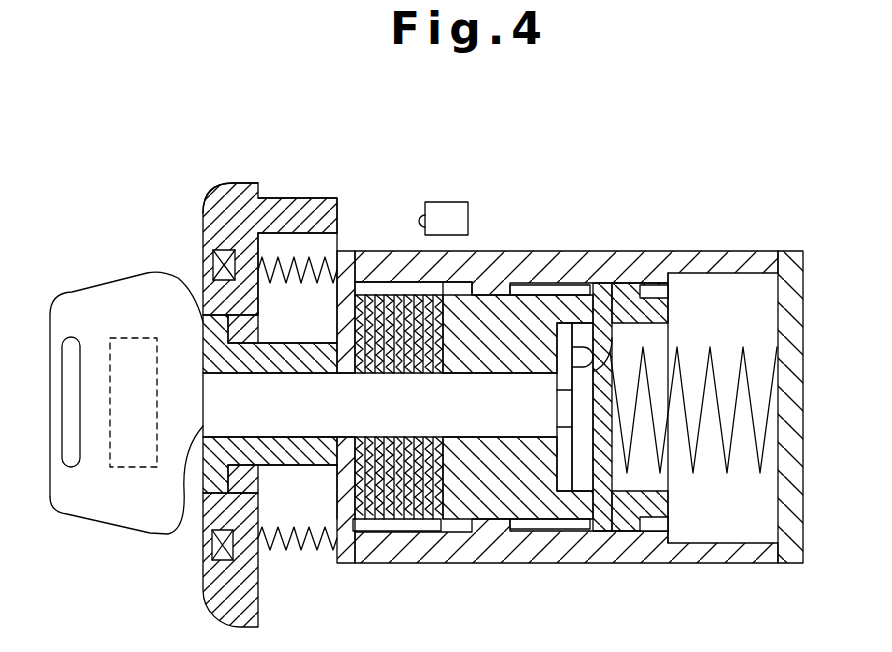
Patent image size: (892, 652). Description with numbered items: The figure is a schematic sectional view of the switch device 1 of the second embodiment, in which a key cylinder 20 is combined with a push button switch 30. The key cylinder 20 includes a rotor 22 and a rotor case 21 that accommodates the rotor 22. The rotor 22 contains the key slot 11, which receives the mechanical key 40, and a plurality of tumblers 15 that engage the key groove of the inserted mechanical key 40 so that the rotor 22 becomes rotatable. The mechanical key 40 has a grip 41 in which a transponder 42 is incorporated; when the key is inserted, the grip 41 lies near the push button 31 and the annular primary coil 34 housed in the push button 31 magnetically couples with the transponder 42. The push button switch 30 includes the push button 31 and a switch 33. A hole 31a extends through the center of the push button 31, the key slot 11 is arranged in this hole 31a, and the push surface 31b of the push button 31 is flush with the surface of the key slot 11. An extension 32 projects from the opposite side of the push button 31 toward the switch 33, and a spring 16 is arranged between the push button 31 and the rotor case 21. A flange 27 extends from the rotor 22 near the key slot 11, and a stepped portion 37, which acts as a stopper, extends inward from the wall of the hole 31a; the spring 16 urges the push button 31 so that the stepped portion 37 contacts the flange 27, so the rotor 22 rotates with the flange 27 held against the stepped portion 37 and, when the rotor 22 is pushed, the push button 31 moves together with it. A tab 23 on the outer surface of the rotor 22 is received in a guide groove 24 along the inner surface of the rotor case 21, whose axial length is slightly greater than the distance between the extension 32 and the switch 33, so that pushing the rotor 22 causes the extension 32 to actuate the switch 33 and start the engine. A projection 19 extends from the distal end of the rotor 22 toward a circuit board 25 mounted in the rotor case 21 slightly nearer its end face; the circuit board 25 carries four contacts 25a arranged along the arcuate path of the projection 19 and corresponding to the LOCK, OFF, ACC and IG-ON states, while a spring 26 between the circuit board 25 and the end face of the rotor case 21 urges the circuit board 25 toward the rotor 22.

The switch device 1 is at (370, 157).
The key slot 11 is at (203, 428).
The tumblers 15 is at (388, 515).
The spring 16 is at (340, 249).
The projection 19 is at (580, 341).
The key cylinder 20 is at (474, 566).
The rotor case 21 is at (703, 252).
The rotor 22 is at (540, 522).
The tab 23 is at (487, 282).
The guide groove 24 is at (532, 286).
The circuit board 25 is at (603, 507).
The contacts 25a is at (600, 330).
The spring 26 is at (748, 384).
The flange 27 is at (238, 487).
The push button switch 30 is at (254, 181).
The push button 31 is at (218, 205).
The hole 31a is at (200, 312).
The push surface 31b is at (200, 232).
The extension 32 is at (320, 198).
The switch 33 is at (455, 203).
The primary coil 34 is at (225, 562).
The stepped portion 37 is at (248, 322).
The mechanical key 40 is at (95, 283).
The grip 41 is at (58, 297).
The transponder 42 is at (127, 467).